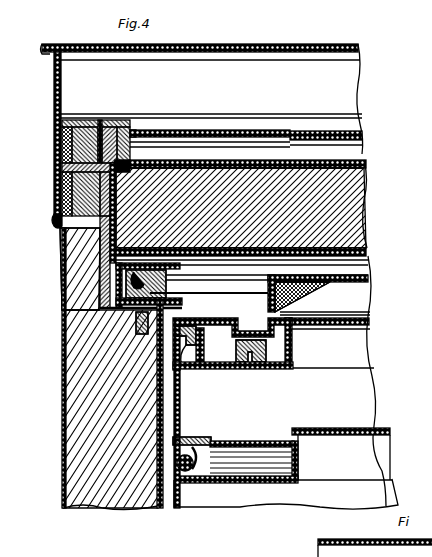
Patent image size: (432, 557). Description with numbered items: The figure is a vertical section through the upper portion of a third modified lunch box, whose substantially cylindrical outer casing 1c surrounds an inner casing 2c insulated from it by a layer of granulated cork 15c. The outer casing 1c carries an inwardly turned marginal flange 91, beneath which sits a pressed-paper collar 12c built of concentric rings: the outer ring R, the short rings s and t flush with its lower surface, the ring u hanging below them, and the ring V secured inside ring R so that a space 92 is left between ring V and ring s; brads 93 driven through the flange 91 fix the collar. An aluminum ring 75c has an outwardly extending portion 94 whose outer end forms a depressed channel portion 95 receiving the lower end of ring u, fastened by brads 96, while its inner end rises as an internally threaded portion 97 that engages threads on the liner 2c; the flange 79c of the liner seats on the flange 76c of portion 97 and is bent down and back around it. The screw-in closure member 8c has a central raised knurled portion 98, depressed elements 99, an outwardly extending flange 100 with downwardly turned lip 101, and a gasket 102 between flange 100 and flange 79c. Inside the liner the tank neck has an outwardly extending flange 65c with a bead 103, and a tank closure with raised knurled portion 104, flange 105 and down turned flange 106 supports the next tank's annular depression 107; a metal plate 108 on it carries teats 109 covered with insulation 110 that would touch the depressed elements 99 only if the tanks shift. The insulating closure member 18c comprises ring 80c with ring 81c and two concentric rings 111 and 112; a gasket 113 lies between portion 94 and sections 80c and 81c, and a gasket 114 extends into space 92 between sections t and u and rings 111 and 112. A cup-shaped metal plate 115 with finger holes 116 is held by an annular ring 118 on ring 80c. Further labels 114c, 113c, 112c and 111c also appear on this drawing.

The inwardly turned marginal flange 91 is at (76, 122).
The brads 93 is at (56, 128).
The ring v V is at (62, 142).
The ring r R is at (66, 160).
The space 92 is at (82, 127).
The concentric ring 111 is at (100, 128).
The concentric ring 112 is at (112, 128).
The ring 80c is at (128, 130).
The annular ring 118 is at (136, 133).
The finger holes 116 is at (268, 137).
The cup-shaped metal plate 115 is at (308, 137).
The gasket 114 is at (70, 172).
The ring s is at (62, 188).
The ring t is at (62, 206).
The collar 12c is at (56, 224).
The ring u is at (72, 238).
The ring 81c is at (98, 264).
The closure member 18c is at (370, 196).
The raised knurled portion 98 is at (366, 268).
The outwardly extending flange 100 is at (112, 272).
The downwardly turned lip 101 is at (126, 286).
The gasket 102 is at (122, 300).
The outwardly extending flange 79c is at (118, 311).
The outwardly extending flange 76c is at (120, 322).
The upwardly extending portion 97 is at (100, 326).
The depressed channel portion 95 is at (112, 334).
The brads 96 is at (128, 330).
The ring 75c is at (130, 345).
The outwardly extending portion 94 is at (104, 386).
The outer casing 1c is at (64, 430).
The layer of granulated cork 15c is at (86, 508).
The inner casing 2c is at (140, 509).
The gasket 113 is at (190, 292).
The closure member 8c is at (379, 291).
The raised knurled portion 104 is at (352, 316).
The door liner strip 114c is at (370, 322).
The depressed elements 99 is at (292, 332).
The metal plate 108 is at (292, 352).
The outwardly extending flange 105 is at (186, 372).
The down turned flange 106 is at (182, 380).
The teats 109 is at (254, 364).
The covering of insulation 110 is at (226, 412).
The bead 103 is at (177, 508).
The outwardly extending flange 65c is at (196, 440).
The annular depression 107 is at (261, 436).
The bottom flange 113c is at (192, 482).
The lower box member 112c is at (376, 420).
The bottom rail 111c is at (376, 490).